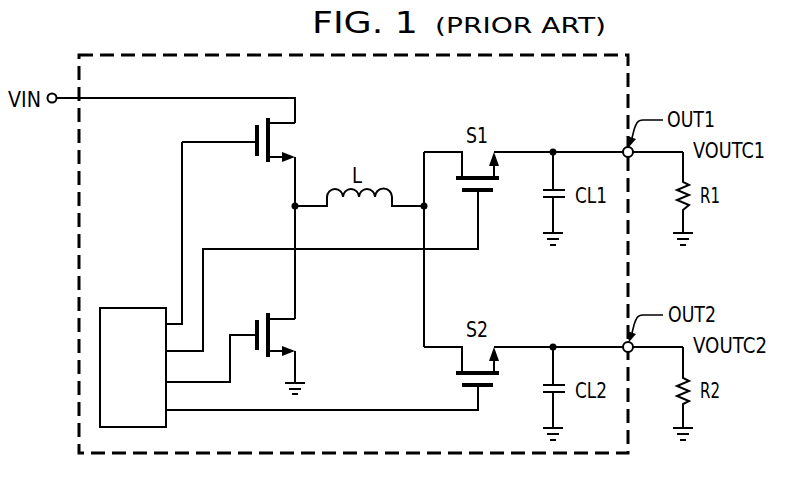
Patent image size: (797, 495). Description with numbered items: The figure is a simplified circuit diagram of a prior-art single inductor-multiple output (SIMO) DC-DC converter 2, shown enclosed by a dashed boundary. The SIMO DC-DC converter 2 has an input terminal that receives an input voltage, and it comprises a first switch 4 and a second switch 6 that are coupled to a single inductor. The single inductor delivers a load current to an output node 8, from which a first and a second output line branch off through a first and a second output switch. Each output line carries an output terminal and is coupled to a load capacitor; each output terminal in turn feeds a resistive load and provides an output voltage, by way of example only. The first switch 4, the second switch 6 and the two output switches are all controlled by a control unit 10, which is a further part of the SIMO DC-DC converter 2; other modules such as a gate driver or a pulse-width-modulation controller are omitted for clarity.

The SIMO DC-DC converter 2 is at (70, 210).
The first switch 4 is at (256, 133).
The second switch 6 is at (256, 327).
The output node 8 is at (420, 201).
The control unit 10 is at (149, 382).